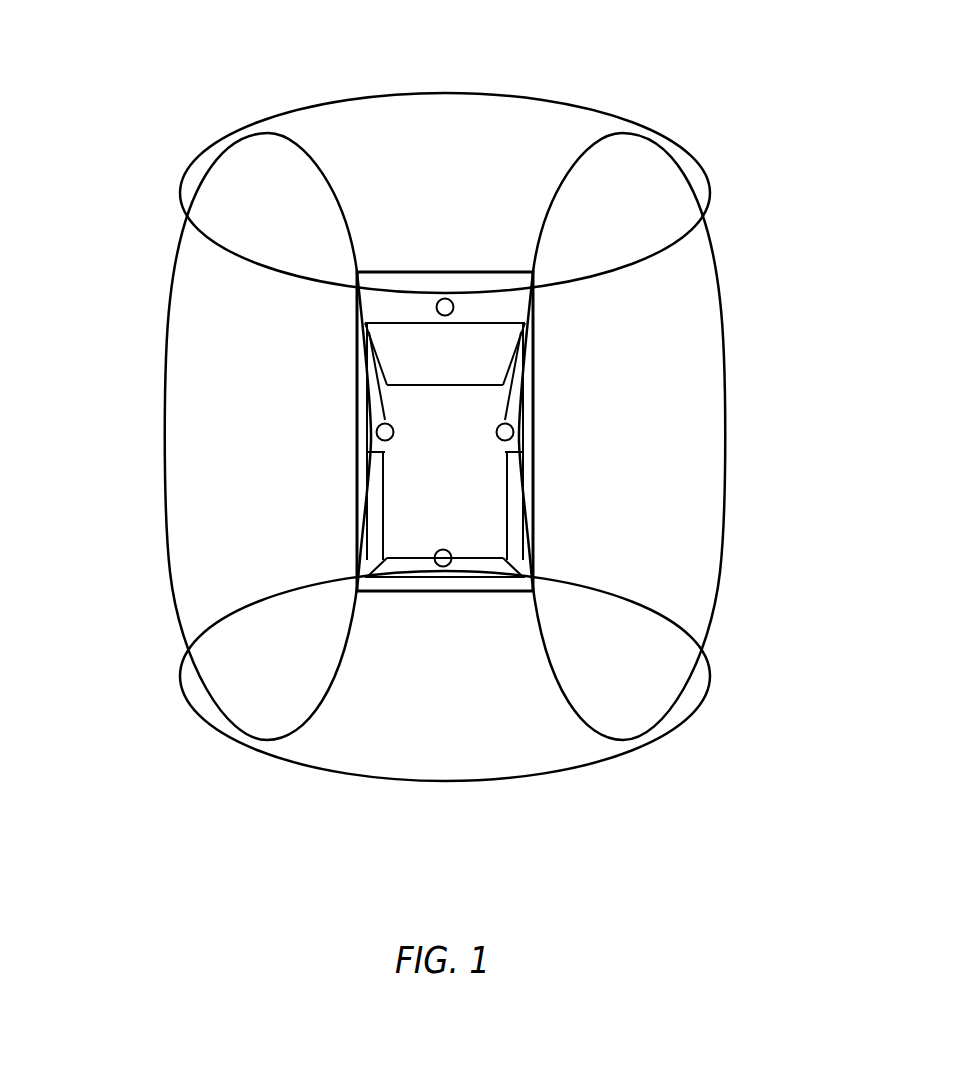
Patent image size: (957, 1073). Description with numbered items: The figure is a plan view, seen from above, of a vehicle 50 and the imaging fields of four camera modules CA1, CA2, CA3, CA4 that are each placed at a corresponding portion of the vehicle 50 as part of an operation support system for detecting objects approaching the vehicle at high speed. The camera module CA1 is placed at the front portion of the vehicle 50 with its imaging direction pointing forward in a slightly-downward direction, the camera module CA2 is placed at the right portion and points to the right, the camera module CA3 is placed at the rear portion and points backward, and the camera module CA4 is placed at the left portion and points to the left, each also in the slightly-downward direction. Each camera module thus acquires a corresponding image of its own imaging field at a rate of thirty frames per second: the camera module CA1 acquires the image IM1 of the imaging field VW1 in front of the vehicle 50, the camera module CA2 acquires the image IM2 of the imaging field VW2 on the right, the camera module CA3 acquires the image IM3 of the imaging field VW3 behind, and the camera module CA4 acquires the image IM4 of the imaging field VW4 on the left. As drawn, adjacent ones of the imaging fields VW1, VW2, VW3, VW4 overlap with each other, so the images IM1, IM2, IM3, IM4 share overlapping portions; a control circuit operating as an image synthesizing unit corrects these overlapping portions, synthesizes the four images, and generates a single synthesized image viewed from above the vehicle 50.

The vehicle 50 is at (470, 503).
The camera module CA1 is at (452, 300).
The camera module CA2 is at (510, 425).
The camera module CA3 is at (440, 563).
The camera module CA4 is at (378, 425).
The imaging field VW1 is at (445, 193).
The imaging field VW2 is at (622, 436).
The imaging field VW3 is at (445, 676).
The imaging field VW4 is at (268, 436).
The image IM1 is at (440, 208).
The image IM2 is at (632, 469).
The image IM3 is at (438, 714).
The image IM4 is at (266, 468).